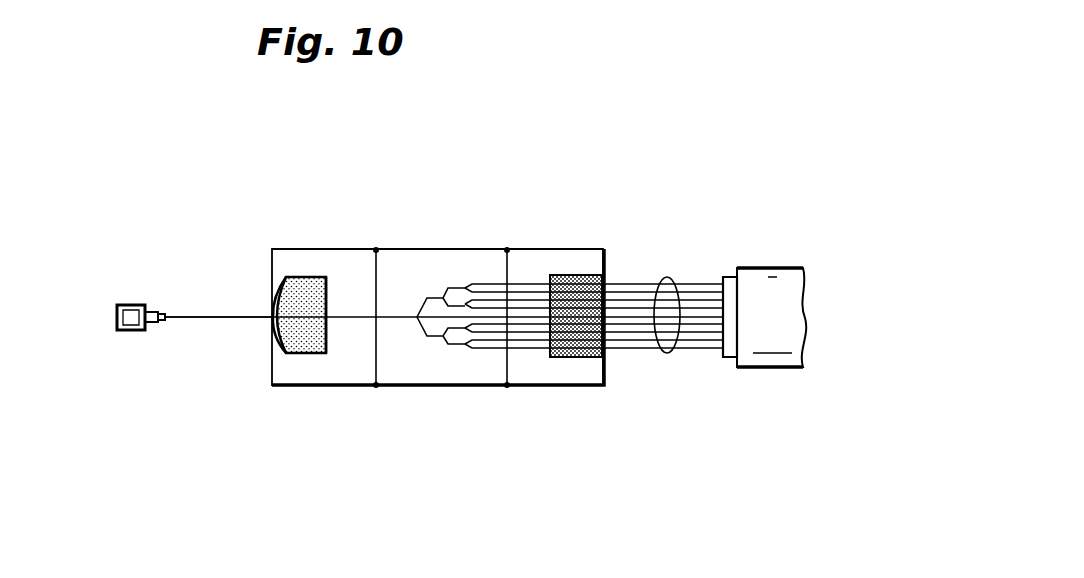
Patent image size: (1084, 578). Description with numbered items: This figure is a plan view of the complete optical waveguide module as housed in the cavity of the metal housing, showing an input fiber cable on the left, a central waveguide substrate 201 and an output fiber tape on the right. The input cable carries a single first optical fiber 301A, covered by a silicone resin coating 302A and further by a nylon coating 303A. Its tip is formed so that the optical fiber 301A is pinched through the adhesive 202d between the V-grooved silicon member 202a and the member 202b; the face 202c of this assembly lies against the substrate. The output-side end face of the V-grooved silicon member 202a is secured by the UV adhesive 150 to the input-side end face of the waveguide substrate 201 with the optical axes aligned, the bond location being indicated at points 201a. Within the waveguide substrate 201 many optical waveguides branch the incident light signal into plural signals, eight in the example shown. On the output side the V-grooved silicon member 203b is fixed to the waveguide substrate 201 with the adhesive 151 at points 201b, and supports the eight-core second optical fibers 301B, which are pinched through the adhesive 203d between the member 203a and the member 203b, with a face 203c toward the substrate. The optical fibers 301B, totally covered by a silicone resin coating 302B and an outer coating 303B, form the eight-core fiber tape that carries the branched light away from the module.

The UV adhesive 150 is at (377, 390).
The adhesive 151 is at (507, 390).
The waveguide substrate 201 is at (452, 265).
The first position point 201a is at (378, 250).
The second position point 201b is at (507, 250).
The V-grooved silicon member 202a is at (275, 287).
The member 202b is at (328, 260).
The lens flat face 202c is at (367, 265).
The adhesive 202d is at (270, 343).
The member 203a is at (608, 275).
The V-grooved silicon member 203b is at (573, 260).
The fiber array top face 203c is at (518, 273).
The adhesive 203d is at (583, 357).
The first optical fiber 301A is at (182, 315).
The second optical fibers 301B is at (678, 312).
The silicone resin coating 302A is at (158, 324).
The silicone resin coating 302B is at (725, 363).
The nylon coating 303A is at (133, 332).
The output connector 303B is at (782, 345).